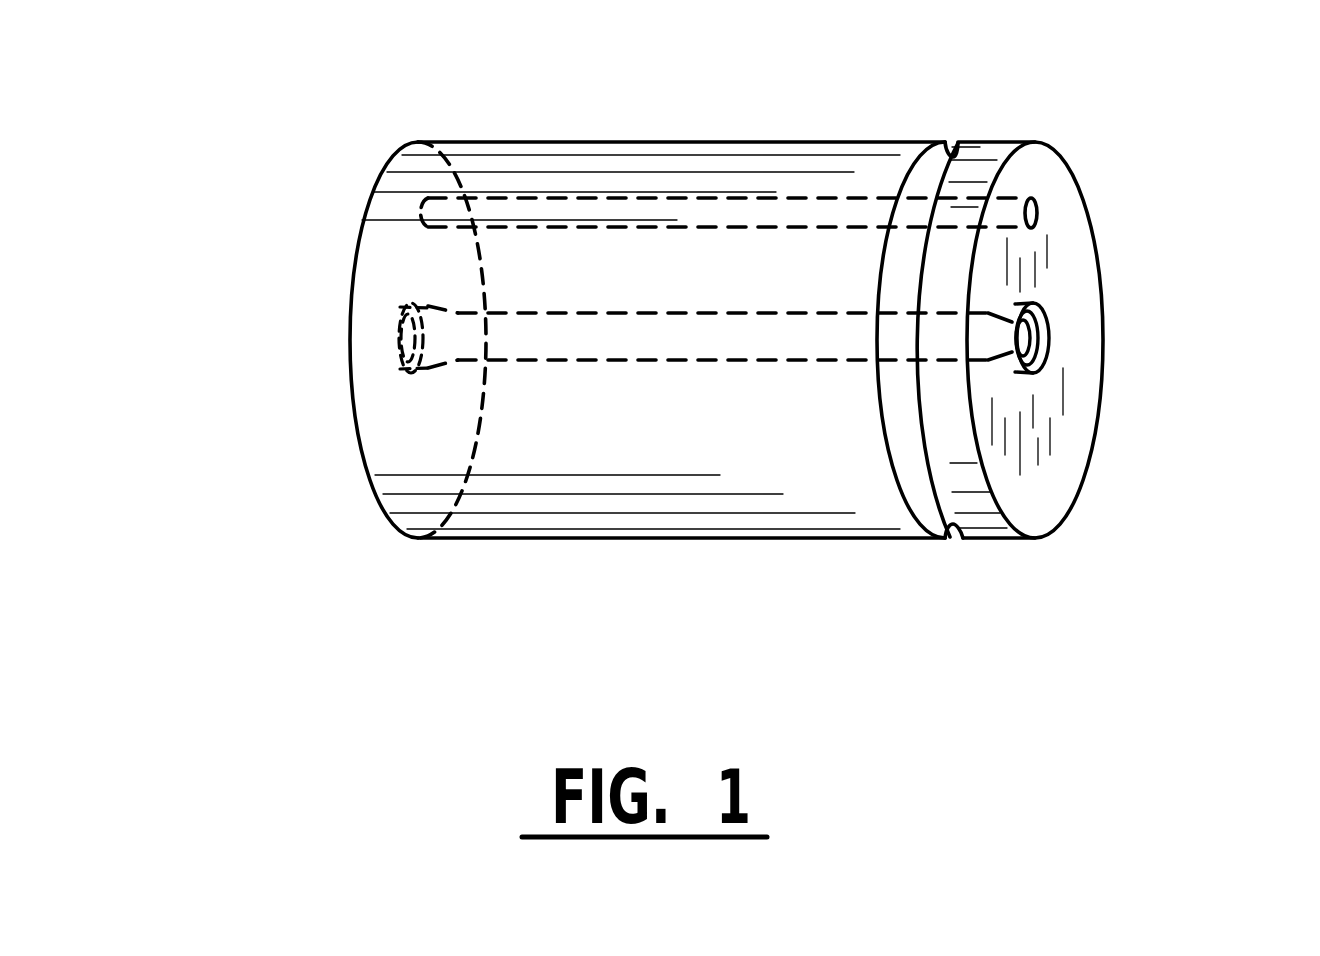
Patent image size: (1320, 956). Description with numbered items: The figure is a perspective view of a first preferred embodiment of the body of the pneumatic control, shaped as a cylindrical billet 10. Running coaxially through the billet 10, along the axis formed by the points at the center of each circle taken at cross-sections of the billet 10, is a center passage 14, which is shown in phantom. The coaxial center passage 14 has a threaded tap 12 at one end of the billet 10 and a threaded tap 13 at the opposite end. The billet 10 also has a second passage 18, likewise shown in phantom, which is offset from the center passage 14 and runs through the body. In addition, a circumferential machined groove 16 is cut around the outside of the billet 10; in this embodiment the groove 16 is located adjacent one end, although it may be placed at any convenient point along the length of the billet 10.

The billet 10 is at (815, 540).
The threaded tap 12 is at (395, 345).
The threaded tap 13 is at (1049, 338).
The center passage 14 is at (543, 311).
The circumferential machined groove 16 is at (958, 137).
The second passage 18 is at (1037, 212).